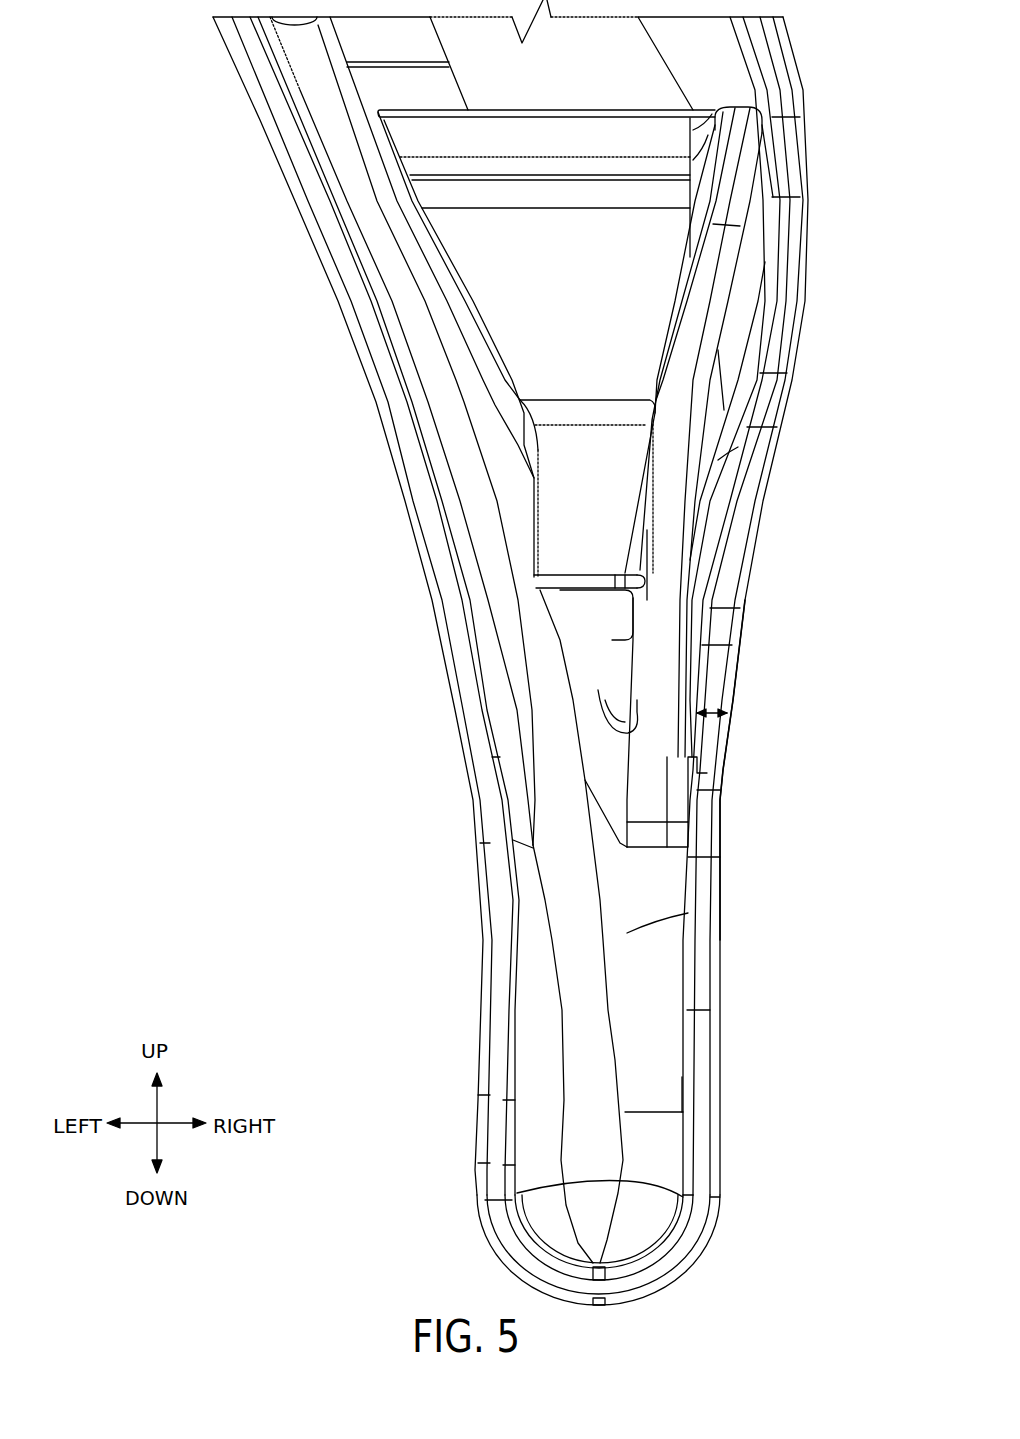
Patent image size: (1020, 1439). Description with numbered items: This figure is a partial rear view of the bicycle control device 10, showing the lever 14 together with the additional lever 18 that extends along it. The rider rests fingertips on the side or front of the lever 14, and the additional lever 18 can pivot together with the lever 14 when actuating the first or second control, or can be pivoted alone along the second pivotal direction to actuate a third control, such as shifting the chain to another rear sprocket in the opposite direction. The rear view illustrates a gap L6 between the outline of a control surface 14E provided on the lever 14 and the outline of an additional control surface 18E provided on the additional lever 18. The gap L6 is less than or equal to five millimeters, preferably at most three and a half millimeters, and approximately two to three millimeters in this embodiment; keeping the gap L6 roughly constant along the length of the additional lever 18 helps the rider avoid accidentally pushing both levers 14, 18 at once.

The bicycle control device 10 is at (126, 126).
The lever 14 is at (810, 242).
The control surface 14E is at (747, 602).
The additional lever 18 is at (470, 345).
The additional control surface 18E is at (693, 665).
The gap L6 is at (703, 712).